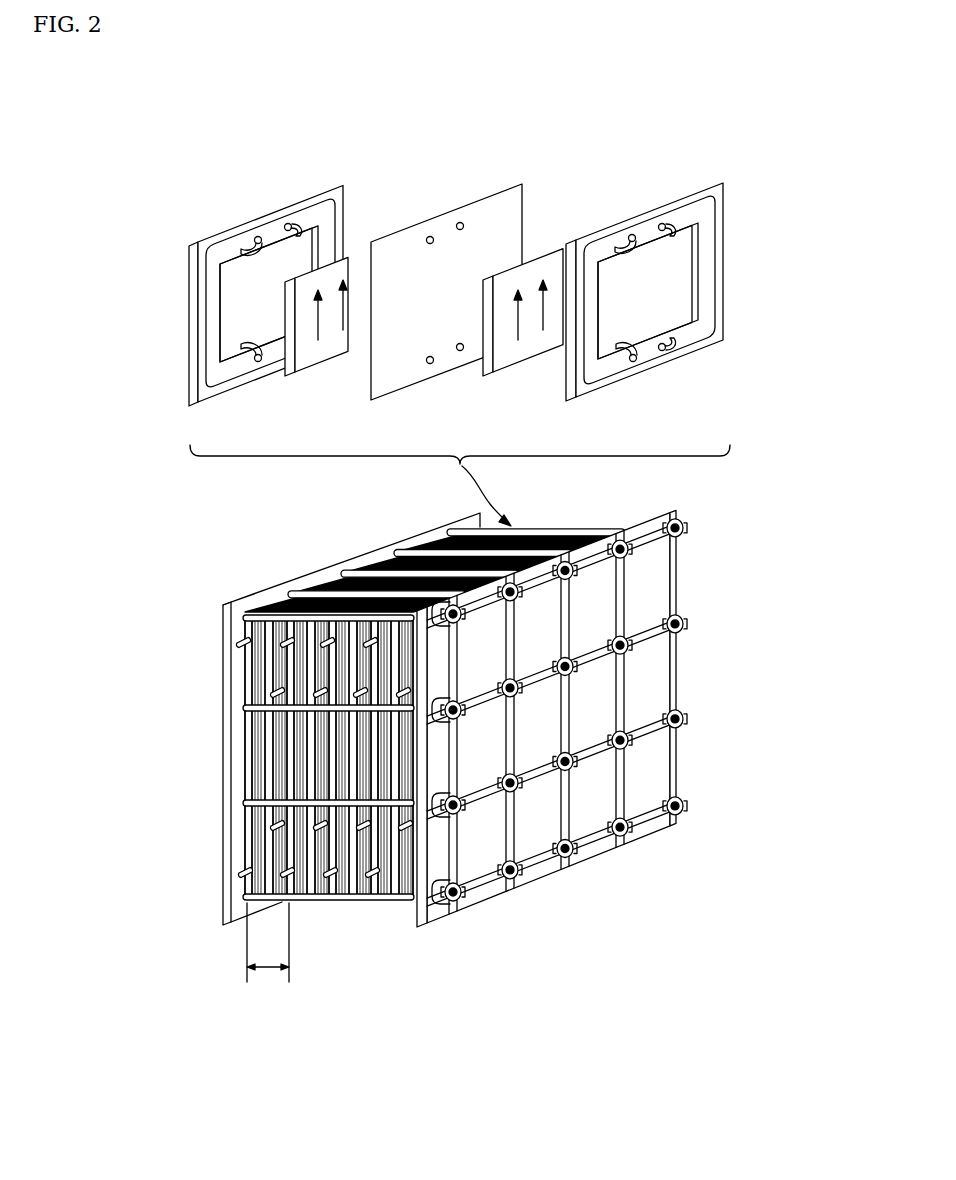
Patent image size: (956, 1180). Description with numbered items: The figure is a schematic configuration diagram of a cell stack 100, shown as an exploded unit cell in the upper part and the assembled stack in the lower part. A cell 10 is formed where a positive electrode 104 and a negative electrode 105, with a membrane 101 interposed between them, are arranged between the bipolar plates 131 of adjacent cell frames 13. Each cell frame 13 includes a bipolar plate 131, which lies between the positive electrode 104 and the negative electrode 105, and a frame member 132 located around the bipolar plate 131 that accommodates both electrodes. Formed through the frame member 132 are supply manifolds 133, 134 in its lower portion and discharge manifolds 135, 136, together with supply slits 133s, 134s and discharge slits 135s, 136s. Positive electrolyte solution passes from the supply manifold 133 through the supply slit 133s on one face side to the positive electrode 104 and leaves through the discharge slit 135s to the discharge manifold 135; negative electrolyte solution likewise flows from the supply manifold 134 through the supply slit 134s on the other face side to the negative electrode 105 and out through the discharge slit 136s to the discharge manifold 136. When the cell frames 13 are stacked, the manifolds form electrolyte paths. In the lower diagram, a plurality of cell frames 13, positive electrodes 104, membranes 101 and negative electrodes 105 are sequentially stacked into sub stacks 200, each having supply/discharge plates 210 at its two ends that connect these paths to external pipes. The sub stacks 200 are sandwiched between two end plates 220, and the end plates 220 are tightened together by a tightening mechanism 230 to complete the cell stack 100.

The cell 10 is at (405, 158).
The cell frame 13 is at (108, 296).
The membrane 101 is at (472, 200).
The positive electrode 104 is at (337, 352).
The negative electrode 105 is at (525, 350).
The bipolar plate 131 is at (243, 293).
The frame member 132 is at (195, 288).
The supply manifold 133 is at (662, 347).
The supply slit 133s is at (680, 333).
The supply manifold 134 is at (258, 362).
The supply slit 134s is at (250, 362).
The discharge manifold 135 is at (256, 237).
The discharge slit 135s is at (243, 243).
The discharge manifold 136 is at (288, 224).
The discharge slit 136s is at (313, 228).
The cell stack 100 is at (704, 647).
The sub stack 200 is at (271, 960).
The supply/discharge plate 210 is at (248, 853).
The end plate 220 is at (228, 625).
The tightening mechanism 230 is at (373, 575).